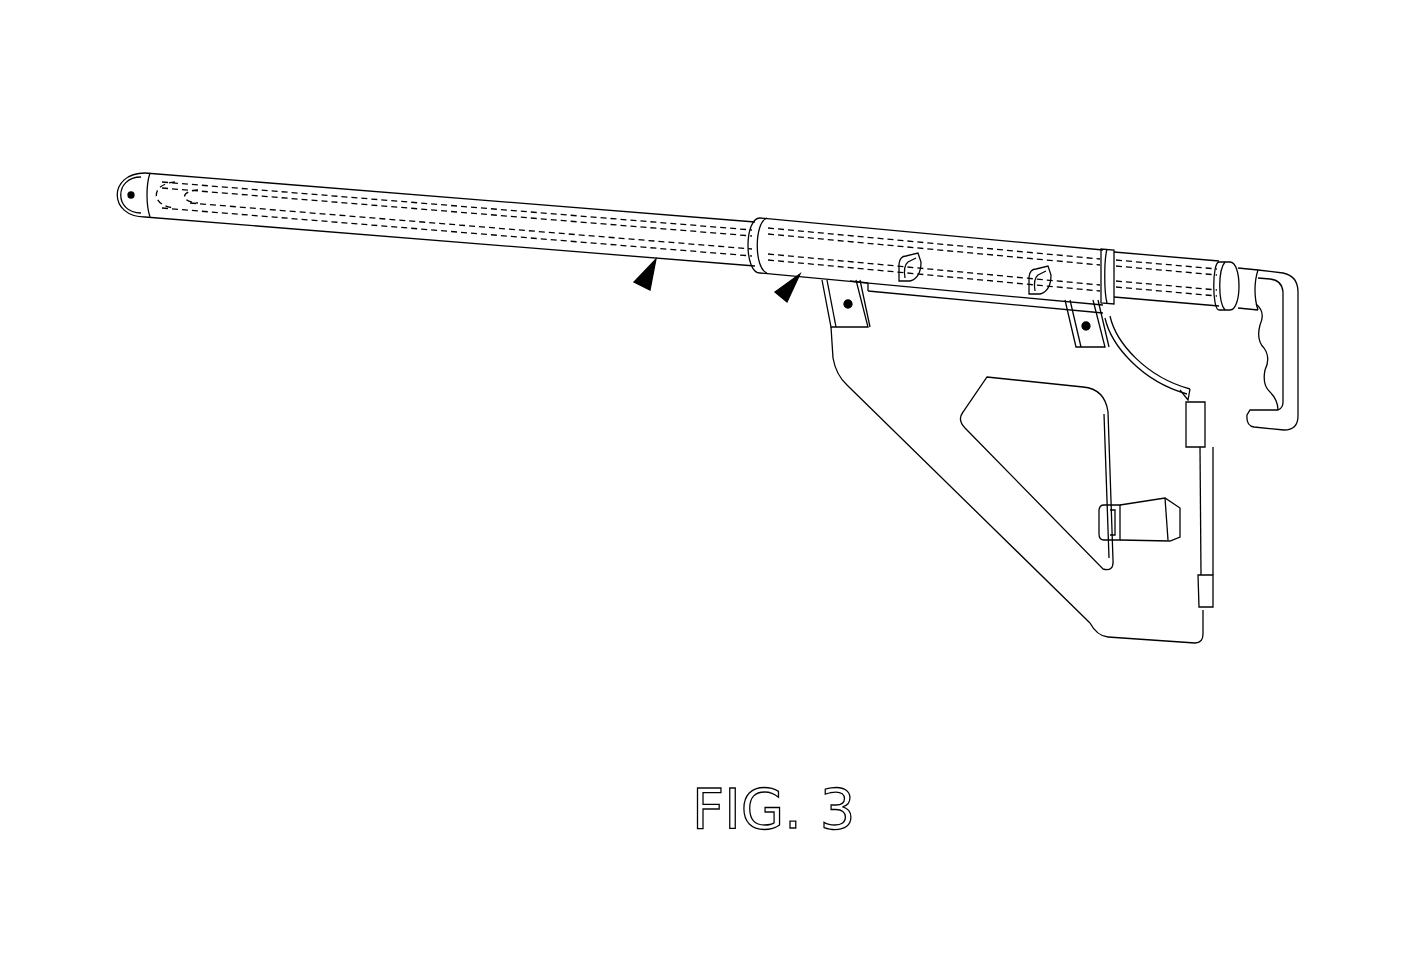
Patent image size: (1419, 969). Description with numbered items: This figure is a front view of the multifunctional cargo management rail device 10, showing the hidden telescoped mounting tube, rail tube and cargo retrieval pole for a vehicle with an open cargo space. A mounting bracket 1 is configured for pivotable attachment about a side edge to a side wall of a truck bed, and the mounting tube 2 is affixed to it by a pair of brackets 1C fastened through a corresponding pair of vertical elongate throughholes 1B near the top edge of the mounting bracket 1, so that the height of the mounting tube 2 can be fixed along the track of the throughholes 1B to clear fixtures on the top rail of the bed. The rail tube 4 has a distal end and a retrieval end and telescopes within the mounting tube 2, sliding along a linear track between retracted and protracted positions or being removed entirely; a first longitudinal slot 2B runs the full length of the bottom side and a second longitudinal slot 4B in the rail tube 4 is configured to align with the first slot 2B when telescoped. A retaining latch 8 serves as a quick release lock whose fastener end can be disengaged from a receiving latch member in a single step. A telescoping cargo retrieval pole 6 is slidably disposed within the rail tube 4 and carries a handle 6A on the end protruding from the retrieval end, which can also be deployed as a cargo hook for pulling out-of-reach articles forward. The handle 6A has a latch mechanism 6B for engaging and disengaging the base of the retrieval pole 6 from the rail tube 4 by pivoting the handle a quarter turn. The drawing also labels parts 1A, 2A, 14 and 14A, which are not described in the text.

The multifunctional cargo management rail device 10 is at (1094, 104).
The mounting bracket 1 is at (950, 366).
The bottom end of frame 1A is at (1208, 637).
The vertical elongate throughholes 1B is at (843, 287).
The brackets 1C is at (848, 303).
The mounting tube 2 is at (960, 240).
The retaining tab 2A is at (907, 280).
The first longitudinal slot 2B is at (645, 282).
The rail tube 4 is at (252, 182).
The second longitudinal slot 4B is at (781, 300).
The telescoping cargo retrieval pole 6 is at (695, 242).
The handle 6A is at (1268, 293).
The latch mechanism 6B is at (1227, 270).
The retaining latch 8 is at (1170, 523).
The handle 14 is at (1210, 388).
The handle strip 14A is at (1218, 607).